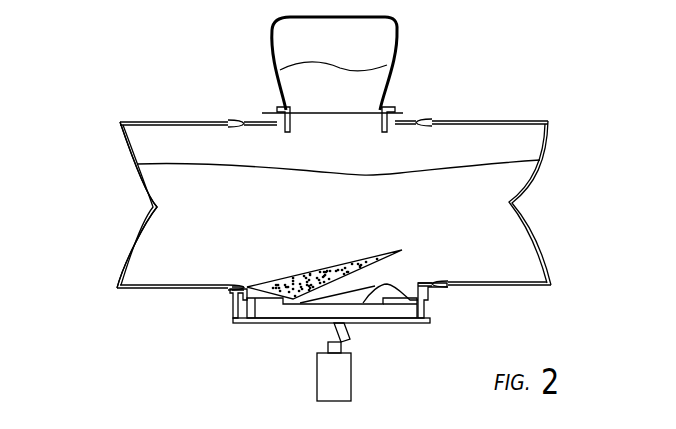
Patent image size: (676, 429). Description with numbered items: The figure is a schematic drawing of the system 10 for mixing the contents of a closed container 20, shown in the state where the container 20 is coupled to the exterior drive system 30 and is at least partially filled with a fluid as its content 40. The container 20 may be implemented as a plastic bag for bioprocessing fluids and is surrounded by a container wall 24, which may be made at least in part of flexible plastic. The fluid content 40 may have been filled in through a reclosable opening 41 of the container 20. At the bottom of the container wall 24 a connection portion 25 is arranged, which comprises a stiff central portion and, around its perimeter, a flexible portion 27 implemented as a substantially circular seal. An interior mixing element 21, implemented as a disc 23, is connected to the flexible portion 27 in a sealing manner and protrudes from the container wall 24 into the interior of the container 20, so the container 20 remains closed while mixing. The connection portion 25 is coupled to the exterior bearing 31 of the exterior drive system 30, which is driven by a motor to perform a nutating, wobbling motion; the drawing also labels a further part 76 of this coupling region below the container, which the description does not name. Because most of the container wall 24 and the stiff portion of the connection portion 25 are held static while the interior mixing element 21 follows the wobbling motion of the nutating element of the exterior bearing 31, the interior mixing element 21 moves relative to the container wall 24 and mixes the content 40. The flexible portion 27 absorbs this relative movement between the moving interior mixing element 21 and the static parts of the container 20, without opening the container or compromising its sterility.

The system 10 is at (614, 240).
The container 20 is at (513, 140).
The interior mixing element 21 is at (300, 272).
The disc 23 is at (343, 266).
The container wall 24 is at (128, 248).
The connection portion 25 is at (390, 325).
The flexible portion 27 is at (418, 283).
The exterior drive system 30 is at (343, 383).
The exterior bearing 31 is at (320, 332).
The content 40 is at (204, 207).
The reclosable opening 41 is at (382, 64).
The housing 76 is at (295, 326).